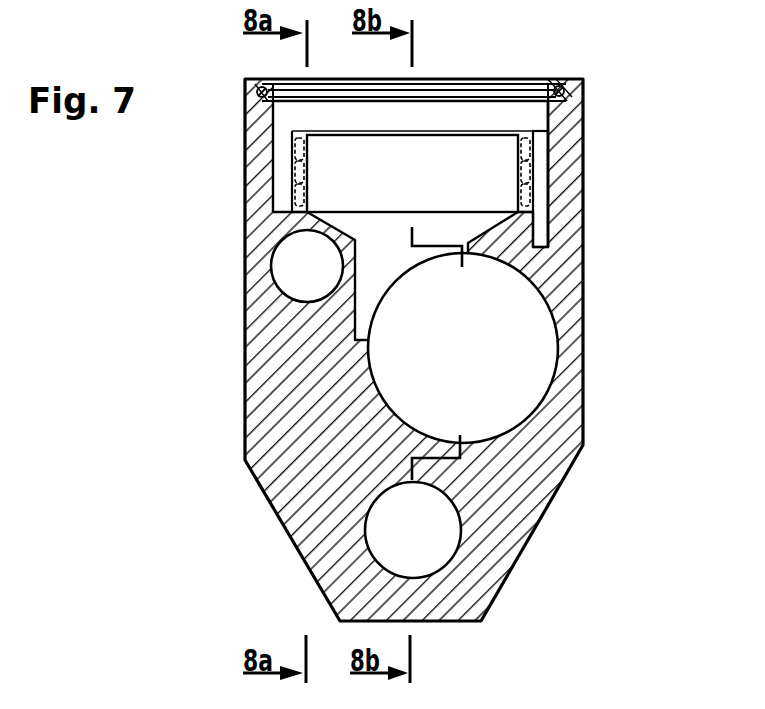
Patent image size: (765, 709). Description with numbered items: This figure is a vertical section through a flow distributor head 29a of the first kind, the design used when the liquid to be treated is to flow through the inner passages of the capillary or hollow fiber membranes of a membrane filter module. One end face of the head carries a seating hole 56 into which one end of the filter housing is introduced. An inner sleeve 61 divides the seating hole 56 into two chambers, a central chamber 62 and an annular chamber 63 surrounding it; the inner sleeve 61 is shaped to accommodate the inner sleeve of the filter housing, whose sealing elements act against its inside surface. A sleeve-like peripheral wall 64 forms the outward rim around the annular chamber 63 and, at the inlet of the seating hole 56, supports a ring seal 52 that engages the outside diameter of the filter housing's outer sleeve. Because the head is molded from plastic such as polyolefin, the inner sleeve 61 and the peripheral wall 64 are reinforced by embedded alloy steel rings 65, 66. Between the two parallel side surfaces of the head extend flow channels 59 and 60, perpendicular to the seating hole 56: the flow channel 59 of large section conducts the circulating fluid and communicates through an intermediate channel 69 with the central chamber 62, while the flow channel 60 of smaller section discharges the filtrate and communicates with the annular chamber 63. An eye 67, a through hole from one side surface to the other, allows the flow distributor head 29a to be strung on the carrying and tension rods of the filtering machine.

The flow distributor head 29a is at (600, 68).
The ring seal 52 is at (325, 97).
The seating hole 56 is at (484, 112).
The flow channel 59 is at (527, 377).
The flow channel 60 is at (285, 277).
The inner sleeve 61 is at (535, 152).
The central chamber 62 is at (437, 163).
The annular chamber 63 is at (542, 228).
The peripheral wall 64 is at (565, 115).
The alloy steel ring 65 is at (532, 176).
The alloy steel ring 66 is at (572, 79).
The eye 67 is at (437, 548).
The intermediate channel 69 is at (377, 290).